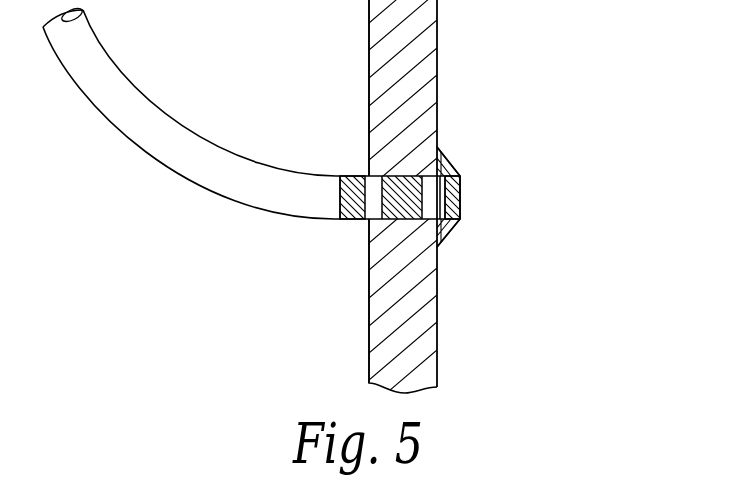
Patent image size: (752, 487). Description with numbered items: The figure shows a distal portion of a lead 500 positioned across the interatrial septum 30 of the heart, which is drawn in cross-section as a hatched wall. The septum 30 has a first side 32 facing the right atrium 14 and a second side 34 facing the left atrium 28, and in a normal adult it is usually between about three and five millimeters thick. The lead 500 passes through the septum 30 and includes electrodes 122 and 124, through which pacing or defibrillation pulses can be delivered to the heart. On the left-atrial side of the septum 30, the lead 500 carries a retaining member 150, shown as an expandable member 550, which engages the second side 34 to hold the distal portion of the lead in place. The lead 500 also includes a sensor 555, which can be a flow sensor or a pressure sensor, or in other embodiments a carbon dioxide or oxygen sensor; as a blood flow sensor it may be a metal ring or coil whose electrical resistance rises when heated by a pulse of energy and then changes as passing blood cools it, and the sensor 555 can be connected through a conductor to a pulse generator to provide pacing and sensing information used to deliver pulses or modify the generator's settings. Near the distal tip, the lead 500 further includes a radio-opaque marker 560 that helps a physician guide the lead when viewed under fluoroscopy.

The right atrium 14 is at (252, 64).
The left atrium 28 is at (604, 64).
The interatrial septum 30 is at (425, 41).
The first side 32 is at (369, 90).
The second side 34 is at (437, 82).
The electrode 122 is at (408, 220).
The electrode 124 is at (352, 220).
The retaining member 150 is at (445, 156).
The lead 500 is at (124, 131).
The expandable member 550 is at (461, 193).
The sensor 555 is at (461, 177).
The radio-opaque marker 560 is at (450, 230).